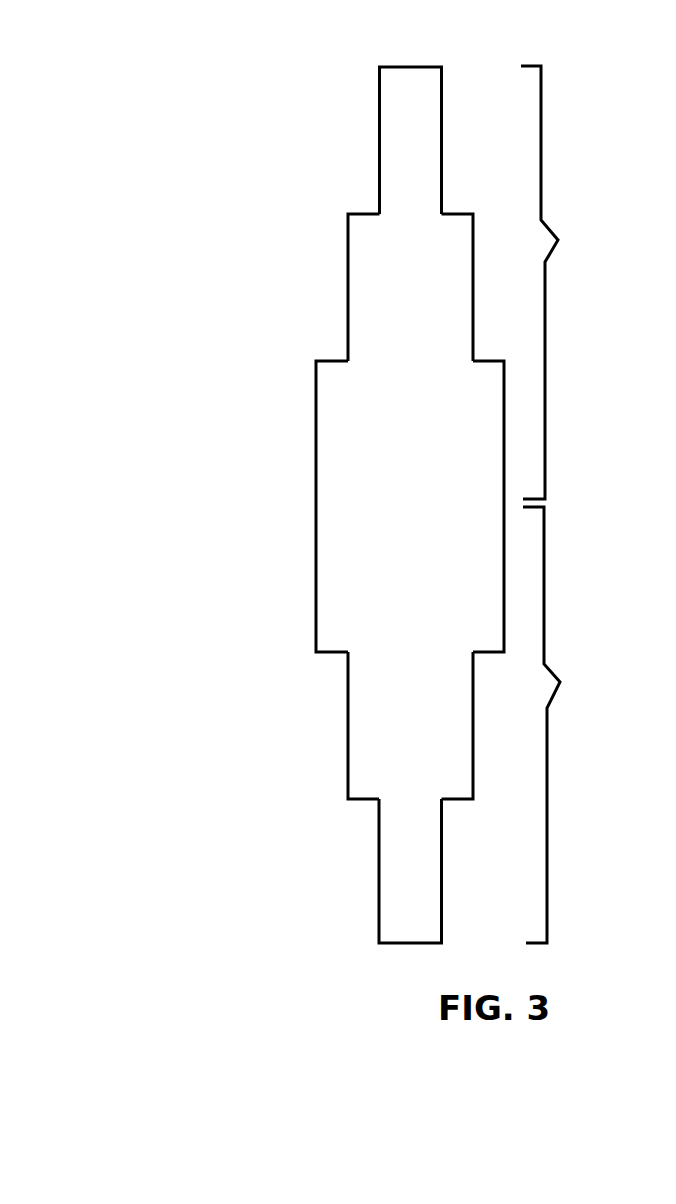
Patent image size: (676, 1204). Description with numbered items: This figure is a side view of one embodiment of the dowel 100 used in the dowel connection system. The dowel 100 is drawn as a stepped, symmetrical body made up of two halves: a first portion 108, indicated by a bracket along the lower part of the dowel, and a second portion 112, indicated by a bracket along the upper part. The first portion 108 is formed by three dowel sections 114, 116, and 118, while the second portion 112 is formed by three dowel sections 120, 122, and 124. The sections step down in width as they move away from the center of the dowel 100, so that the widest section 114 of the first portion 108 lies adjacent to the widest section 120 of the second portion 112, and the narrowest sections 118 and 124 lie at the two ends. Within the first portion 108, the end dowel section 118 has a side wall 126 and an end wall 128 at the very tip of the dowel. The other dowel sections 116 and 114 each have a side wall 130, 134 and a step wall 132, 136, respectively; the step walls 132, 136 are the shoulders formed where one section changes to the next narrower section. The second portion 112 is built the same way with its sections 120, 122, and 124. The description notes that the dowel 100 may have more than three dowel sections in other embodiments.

The dowel 100 is at (283, 474).
The first portion 108 is at (571, 725).
The second portion 112 is at (574, 282).
The dowel section 114 is at (385, 597).
The dowel section 116 is at (386, 733).
The dowel section 118 is at (389, 886).
The dowel section 120 is at (379, 426).
The dowel section 122 is at (388, 293).
The dowel section 124 is at (390, 143).
The side wall 126 is at (383, 905).
The end wall 128 is at (407, 947).
The side wall 130 is at (347, 758).
The step wall 132 is at (370, 803).
The side wall 134 is at (313, 633).
The step wall 136 is at (332, 657).